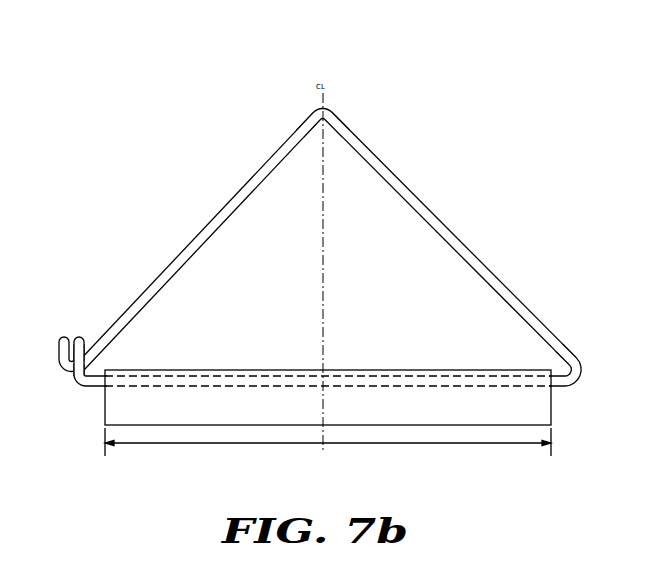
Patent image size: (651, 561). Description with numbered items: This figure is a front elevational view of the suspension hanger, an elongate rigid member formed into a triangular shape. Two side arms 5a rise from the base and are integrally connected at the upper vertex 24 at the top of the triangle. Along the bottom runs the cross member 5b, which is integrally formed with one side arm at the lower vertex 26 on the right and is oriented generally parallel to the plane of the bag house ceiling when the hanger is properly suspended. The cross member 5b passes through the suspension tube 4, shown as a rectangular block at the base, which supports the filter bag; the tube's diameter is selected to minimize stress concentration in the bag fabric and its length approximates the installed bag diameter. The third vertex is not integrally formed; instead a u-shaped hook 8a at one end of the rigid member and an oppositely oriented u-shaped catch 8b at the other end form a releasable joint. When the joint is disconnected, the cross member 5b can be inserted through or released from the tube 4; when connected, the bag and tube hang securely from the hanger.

The suspension tube 4 is at (104, 400).
The side arms 5a is at (173, 257).
The cross member 5b is at (387, 388).
The u-shaped hook 8a is at (60, 350).
The u-shaped catch 8b is at (83, 375).
The upper vertex 24 is at (327, 111).
The lower vertex 26 is at (582, 371).